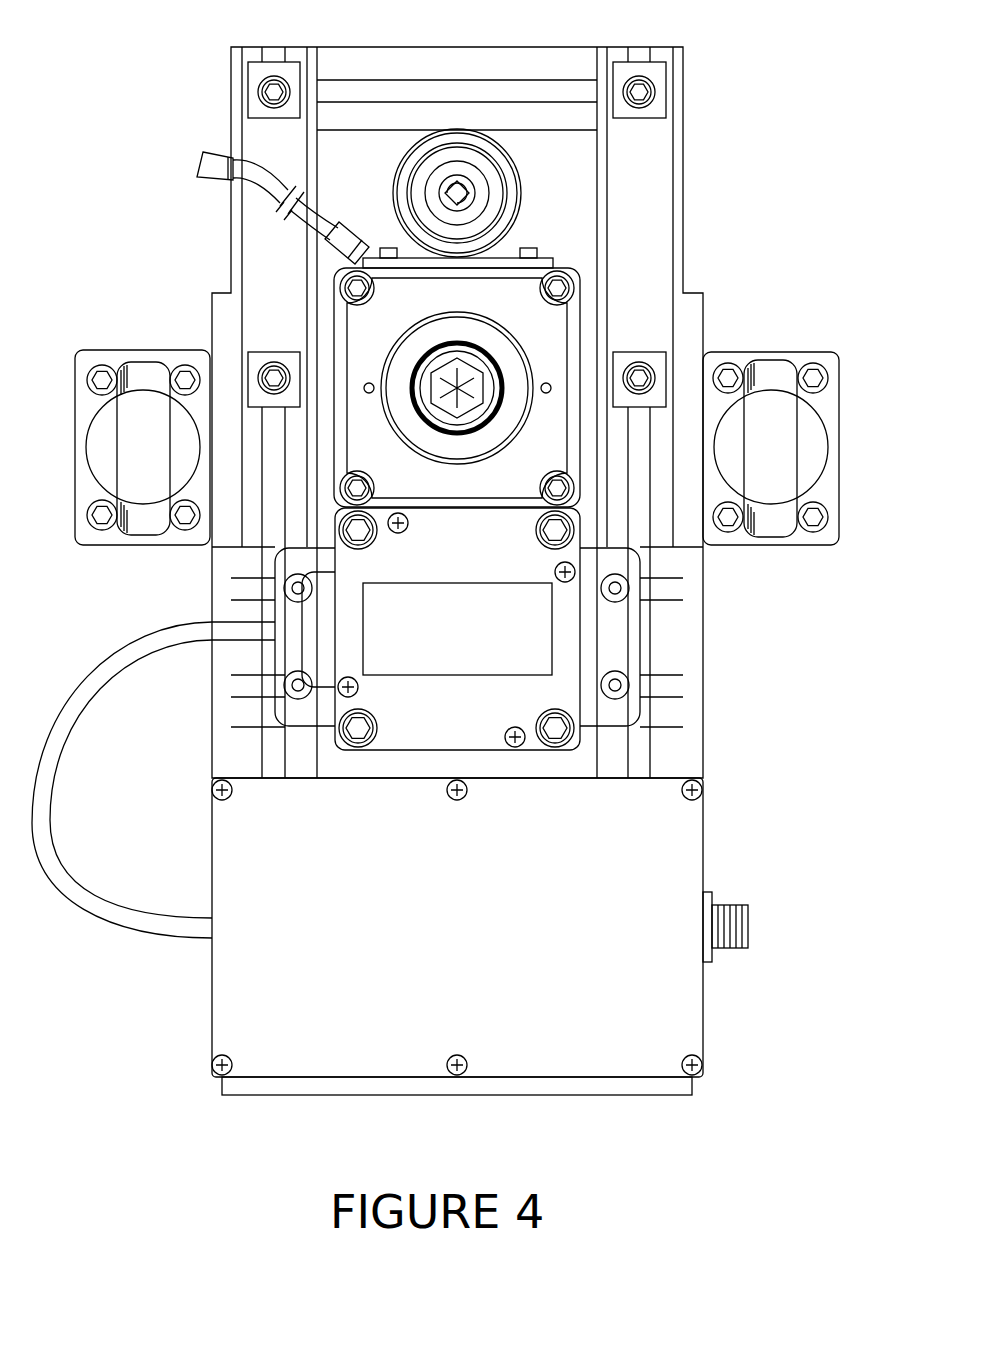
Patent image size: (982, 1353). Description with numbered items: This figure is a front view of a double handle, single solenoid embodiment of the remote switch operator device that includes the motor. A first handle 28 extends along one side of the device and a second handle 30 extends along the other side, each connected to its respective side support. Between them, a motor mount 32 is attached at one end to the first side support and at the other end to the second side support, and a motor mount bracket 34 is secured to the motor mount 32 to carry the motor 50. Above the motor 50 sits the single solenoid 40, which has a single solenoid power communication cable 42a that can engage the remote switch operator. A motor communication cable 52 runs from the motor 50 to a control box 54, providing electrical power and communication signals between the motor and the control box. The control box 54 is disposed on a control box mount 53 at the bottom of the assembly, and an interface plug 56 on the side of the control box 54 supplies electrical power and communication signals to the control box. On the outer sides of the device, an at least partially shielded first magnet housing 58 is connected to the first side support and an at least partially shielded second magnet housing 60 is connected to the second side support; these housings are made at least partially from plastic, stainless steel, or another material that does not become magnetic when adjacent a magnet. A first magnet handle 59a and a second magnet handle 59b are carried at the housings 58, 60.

The first handle 28 is at (262, 240).
The second handle 30 is at (652, 200).
The motor mount 32 is at (668, 645).
The motor mount bracket 34 is at (625, 625).
The single solenoid 40 is at (509, 156).
The single solenoid power communication cable 42a is at (257, 168).
The motor 50 is at (423, 732).
The motor communication cable 52 is at (110, 674).
The control box mount 53 is at (453, 1080).
The control box 54 is at (678, 1012).
The interface plug 56 is at (750, 926).
The first magnet housing 58 is at (142, 546).
The first magnet handle 59a is at (148, 387).
The second magnet handle 59b is at (773, 387).
The second magnet housing 60 is at (770, 546).